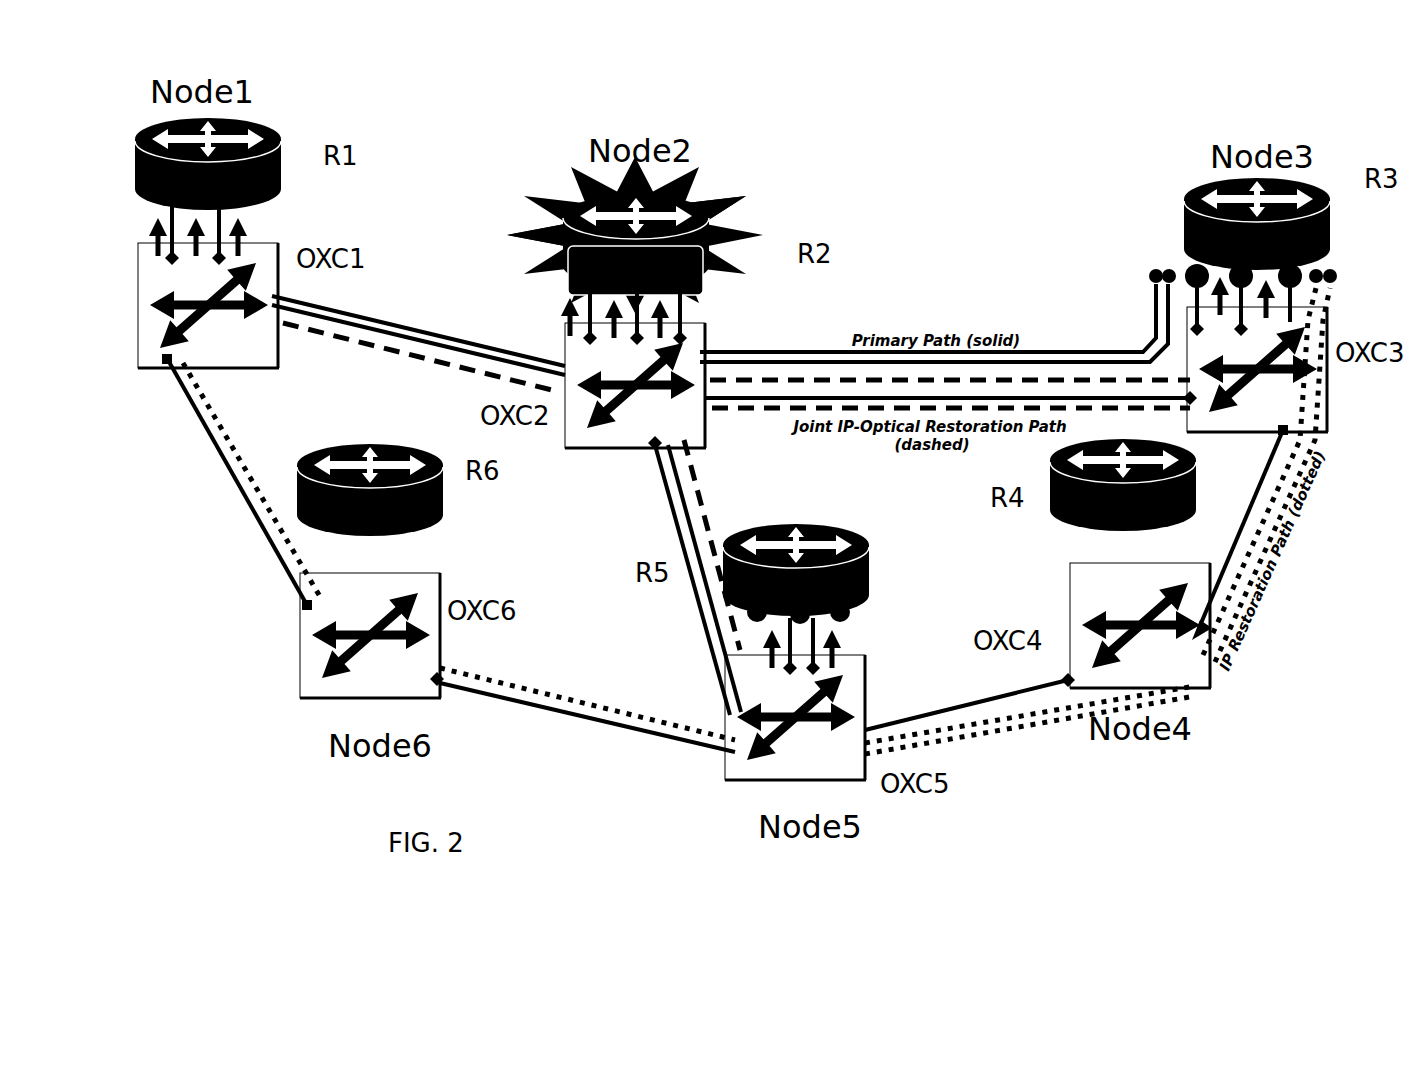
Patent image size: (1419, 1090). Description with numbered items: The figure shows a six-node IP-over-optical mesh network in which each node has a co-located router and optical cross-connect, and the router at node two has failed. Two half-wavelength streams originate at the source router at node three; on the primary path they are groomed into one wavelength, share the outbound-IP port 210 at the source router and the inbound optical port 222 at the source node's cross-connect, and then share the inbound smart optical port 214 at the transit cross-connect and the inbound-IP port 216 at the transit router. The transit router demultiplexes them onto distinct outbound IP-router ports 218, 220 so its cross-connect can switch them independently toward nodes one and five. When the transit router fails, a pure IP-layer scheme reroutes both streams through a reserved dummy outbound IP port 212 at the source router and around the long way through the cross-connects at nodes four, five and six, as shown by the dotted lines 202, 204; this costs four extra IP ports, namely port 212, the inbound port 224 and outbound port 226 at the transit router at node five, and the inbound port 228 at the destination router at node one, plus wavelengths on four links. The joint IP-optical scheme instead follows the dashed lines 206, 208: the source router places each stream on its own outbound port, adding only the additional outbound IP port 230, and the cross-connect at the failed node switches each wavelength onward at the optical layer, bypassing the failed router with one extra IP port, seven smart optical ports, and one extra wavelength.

The dotted line 202 is at (587, 700).
The dotted line 204 is at (953, 700).
The dashed line 206 is at (1072, 378).
The dashed line 208 is at (737, 412).
The outbound-IP port 210 is at (1186, 268).
The dummy outbound IP port 212 is at (1305, 266).
The inbound smart optical port 214 is at (742, 352).
The inbound-IP port 216 is at (740, 236).
The outbound IP-router port 218 is at (552, 243).
The outbound IP-router port 220 is at (716, 190).
The inbound optical port 222 is at (1196, 322).
The inbound port 224 is at (850, 541).
The outbound port 226 is at (760, 628).
The inbound port 228 is at (158, 206).
The additional outbound IP port 230 is at (1243, 294).